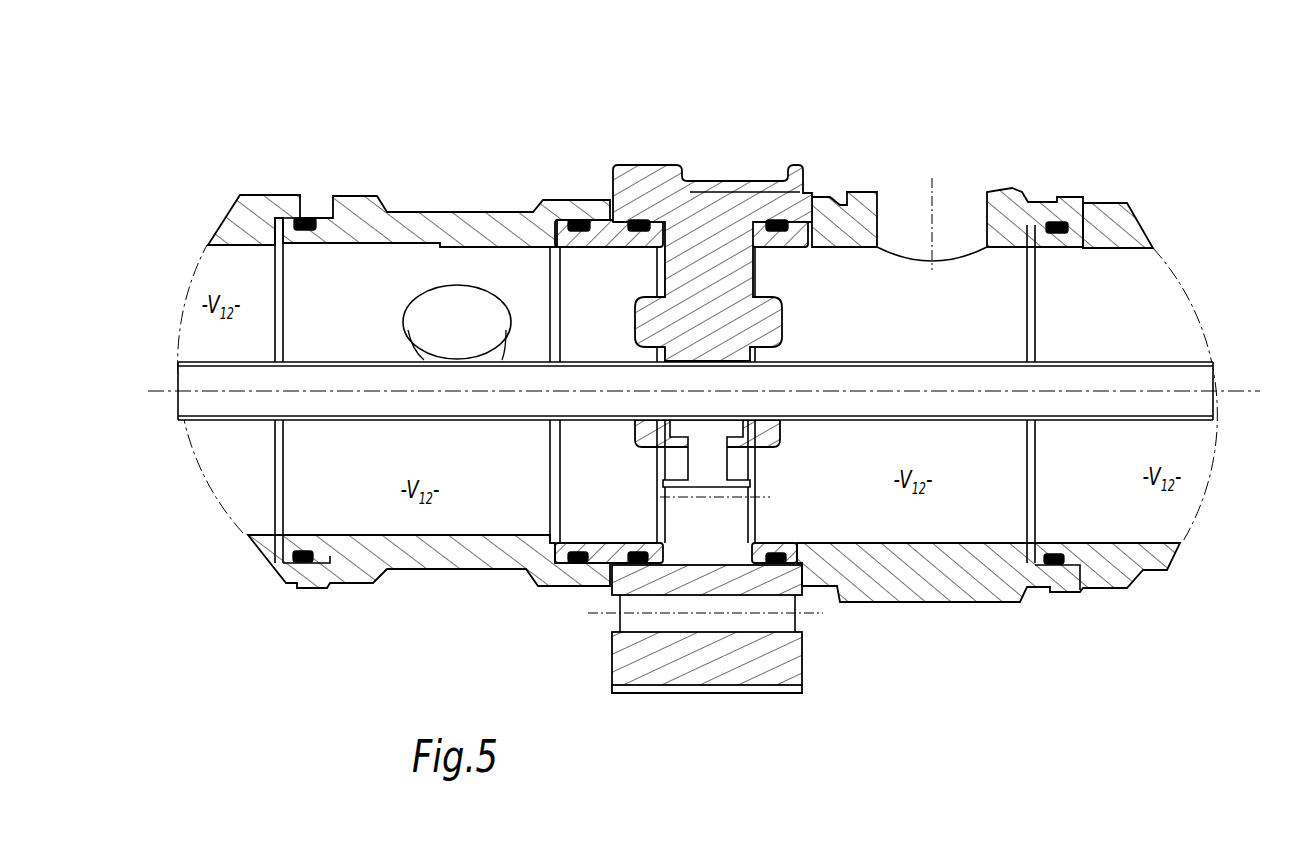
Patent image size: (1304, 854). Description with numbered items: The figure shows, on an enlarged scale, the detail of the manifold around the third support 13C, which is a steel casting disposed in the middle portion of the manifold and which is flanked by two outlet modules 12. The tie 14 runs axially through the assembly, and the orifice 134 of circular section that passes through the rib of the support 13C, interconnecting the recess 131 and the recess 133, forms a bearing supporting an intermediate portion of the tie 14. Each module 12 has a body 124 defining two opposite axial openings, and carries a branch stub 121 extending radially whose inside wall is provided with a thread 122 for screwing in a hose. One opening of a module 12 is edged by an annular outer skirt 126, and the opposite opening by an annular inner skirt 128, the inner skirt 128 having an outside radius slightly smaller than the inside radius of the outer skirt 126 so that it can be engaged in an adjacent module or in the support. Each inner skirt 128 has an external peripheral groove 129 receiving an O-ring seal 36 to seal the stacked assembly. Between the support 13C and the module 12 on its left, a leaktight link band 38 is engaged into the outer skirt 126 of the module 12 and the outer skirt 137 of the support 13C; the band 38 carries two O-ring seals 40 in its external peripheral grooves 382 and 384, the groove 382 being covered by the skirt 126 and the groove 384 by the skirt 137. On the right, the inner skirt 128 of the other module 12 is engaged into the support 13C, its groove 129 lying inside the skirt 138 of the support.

The outlet module 12 is at (285, 583).
The tie 14 is at (1150, 383).
The O-ring seal 36 is at (302, 212).
The leaktight link band 38 is at (595, 210).
The O-ring seal 40 is at (580, 565).
The branch stub 121 is at (1017, 193).
The thread 122 is at (977, 216).
The body 124 is at (406, 563).
The outer skirt 126 is at (575, 219).
The inner skirt 128 is at (757, 220).
The external peripheral groove 129 is at (772, 636).
The recess 131 is at (773, 355).
The recess 133 is at (645, 352).
The orifice 134 is at (702, 369).
The outer skirt 137 is at (627, 200).
The skirt 138 is at (805, 615).
The external peripheral groove 382 is at (605, 232).
The external peripheral groove 384 is at (641, 570).
The third support 13C is at (684, 159).